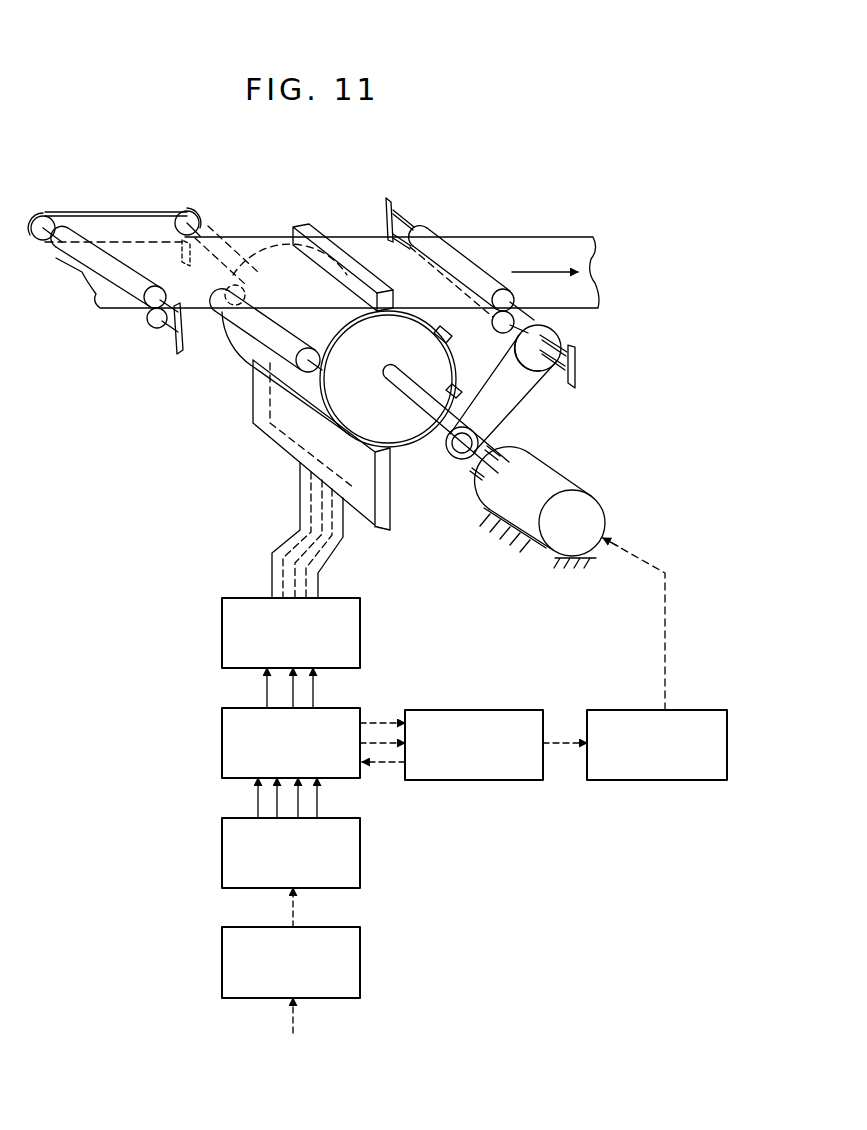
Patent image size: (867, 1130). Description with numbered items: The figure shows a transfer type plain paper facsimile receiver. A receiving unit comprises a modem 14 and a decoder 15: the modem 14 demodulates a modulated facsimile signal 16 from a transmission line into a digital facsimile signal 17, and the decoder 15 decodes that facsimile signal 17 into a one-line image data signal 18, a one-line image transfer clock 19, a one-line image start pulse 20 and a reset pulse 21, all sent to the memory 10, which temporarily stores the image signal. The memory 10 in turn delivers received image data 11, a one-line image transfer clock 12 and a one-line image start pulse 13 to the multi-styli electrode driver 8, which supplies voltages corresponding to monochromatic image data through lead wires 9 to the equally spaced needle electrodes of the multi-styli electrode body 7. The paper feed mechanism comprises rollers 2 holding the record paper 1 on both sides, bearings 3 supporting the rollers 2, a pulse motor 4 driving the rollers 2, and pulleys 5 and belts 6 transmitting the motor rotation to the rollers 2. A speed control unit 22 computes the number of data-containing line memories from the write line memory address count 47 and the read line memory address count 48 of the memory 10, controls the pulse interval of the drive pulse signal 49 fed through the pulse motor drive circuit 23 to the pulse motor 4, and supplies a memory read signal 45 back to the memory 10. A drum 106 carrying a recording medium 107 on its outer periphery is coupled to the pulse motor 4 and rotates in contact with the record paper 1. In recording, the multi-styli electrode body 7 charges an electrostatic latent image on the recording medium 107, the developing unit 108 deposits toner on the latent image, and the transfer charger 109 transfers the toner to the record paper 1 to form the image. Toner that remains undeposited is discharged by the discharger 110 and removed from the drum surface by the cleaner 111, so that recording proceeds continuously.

The record paper 1 is at (552, 238).
The rollers 2 is at (144, 314).
The bearings 3 is at (177, 354).
The pulse motor 4 is at (564, 472).
The pulleys 5 is at (44, 210).
The belts 6 is at (117, 212).
The multi-styli electrode body 7 is at (393, 510).
The multi-styli electrode driver 8 is at (362, 628).
The lead wires 9 is at (288, 538).
The memory 10 is at (222, 753).
The received image data 11 is at (313, 690).
The one-line image transfer clock 12 is at (293, 690).
The one-line image start pulse 13 is at (263, 677).
The modem 14 is at (222, 975).
The decoder 15 is at (222, 868).
The modulated facsimile signal 16 is at (295, 1022).
The digital facsimile signal 17 is at (294, 907).
The one-line image data signal 18 is at (257, 784).
The one-line image transfer clock 19 is at (298, 800).
The one-line image start pulse 20 is at (298, 802).
The reset pulse 21 is at (277, 800).
The speed control unit 22 is at (484, 710).
The pulse motor drive circuit 23 is at (606, 710).
The memory read signal 45 is at (397, 763).
The write line memory address signal 47 is at (384, 722).
The read line memory address signal 48 is at (384, 740).
The drive pulse signal 49 is at (567, 739).
The drum 106 is at (420, 432).
The recording medium 107 is at (352, 330).
The developing unit 108 is at (231, 321).
The transfer charger 109 is at (301, 224).
The discharger 110 is at (446, 324).
The cleaner 111 is at (458, 385).